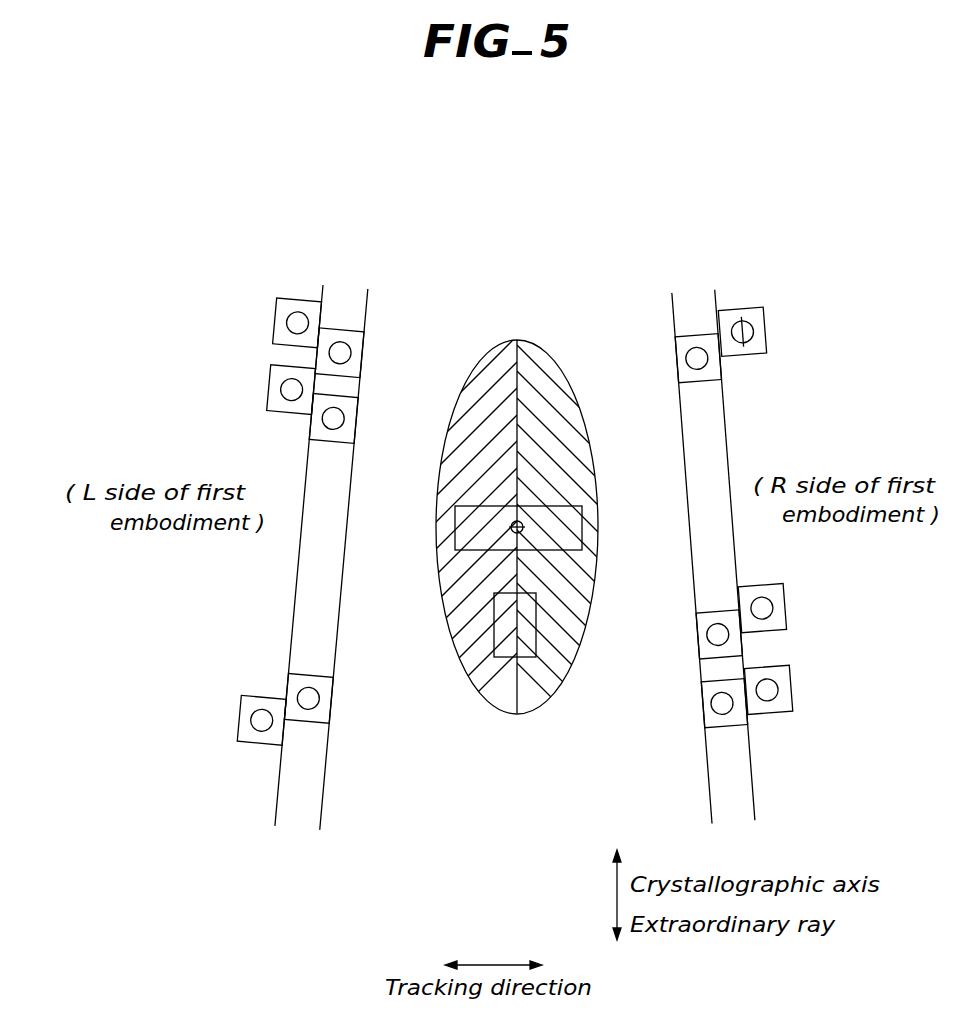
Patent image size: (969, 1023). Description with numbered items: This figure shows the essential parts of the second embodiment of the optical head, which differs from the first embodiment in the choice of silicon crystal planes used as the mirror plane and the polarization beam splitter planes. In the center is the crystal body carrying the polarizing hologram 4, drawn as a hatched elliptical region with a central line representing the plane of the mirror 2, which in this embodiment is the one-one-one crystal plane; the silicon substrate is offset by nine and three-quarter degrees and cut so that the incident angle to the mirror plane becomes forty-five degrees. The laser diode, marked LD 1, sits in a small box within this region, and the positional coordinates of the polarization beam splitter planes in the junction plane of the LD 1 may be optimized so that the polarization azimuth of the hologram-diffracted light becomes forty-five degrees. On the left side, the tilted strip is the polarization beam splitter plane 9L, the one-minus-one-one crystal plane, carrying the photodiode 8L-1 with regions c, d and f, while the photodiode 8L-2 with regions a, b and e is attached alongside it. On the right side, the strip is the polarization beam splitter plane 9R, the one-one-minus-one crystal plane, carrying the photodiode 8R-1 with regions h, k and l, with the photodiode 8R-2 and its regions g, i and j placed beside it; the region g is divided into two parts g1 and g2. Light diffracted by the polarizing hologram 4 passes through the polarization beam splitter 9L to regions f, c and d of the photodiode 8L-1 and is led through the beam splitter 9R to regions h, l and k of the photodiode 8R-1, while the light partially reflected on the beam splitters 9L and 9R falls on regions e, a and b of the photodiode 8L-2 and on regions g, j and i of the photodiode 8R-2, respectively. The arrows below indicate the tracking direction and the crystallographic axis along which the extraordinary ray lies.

The LD 1 is at (492, 666).
The mirror 2 is at (481, 520).
The polarizing hologram 4 is at (557, 653).
The laser diode LD is at (515, 625).
The polarization beam splitter plane 9L is at (358, 209).
The photodiode 8L-1 is at (336, 525).
The photodiode 8L-2 is at (318, 276).
The polarization beam splitter plane 9R is at (715, 288).
The photodiode 8R-1 is at (692, 531).
The photodiode 8R-2 is at (762, 286).
The region of photodiode 8L-2 a is at (275, 323).
The region of photodiode 8L-2 b is at (272, 391).
The region of photodiode 8L-1 c is at (352, 357).
The region of photodiode 8L-1 d is at (346, 420).
The region of photodiode 8L-2 e is at (243, 721).
The region of photodiode 8L-1 f is at (320, 698).
The region of photodiode 8R-2 g is at (786, 354).
The sub-region of region g g1 is at (733, 355).
The sub-region of region g g2 is at (763, 337).
The region of photodiode 8R-1 h is at (678, 362).
The region of photodiode 8R-2 i is at (786, 608).
The region of photodiode 8R-2 j is at (793, 692).
The region of photodiode 8R-1 k is at (704, 635).
The region of photodiode 8R-1 l is at (707, 705).